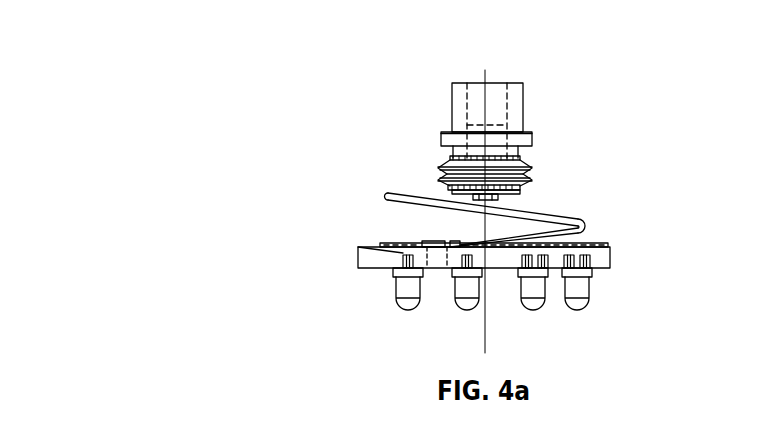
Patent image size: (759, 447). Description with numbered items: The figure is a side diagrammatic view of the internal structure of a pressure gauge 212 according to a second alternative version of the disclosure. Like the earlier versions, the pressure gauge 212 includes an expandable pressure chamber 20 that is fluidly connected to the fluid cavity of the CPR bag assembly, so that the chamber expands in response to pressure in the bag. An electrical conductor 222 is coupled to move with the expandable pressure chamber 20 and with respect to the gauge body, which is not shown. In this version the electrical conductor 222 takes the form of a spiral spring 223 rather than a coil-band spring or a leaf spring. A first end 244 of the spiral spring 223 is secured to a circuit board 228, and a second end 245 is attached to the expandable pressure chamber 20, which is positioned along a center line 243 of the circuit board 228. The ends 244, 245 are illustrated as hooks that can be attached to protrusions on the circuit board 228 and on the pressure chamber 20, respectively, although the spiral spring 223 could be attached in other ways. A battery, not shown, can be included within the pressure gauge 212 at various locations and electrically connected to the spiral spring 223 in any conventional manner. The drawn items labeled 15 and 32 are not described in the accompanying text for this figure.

The central axis 15 is at (489, 196).
The pressure gauge 212 is at (556, 97).
The center line 243 is at (485, 117).
The expandable pressure chamber 20 is at (534, 164).
The second end 245 is at (500, 198).
The electrical conductor 222 is at (545, 220).
The spiral spring 223 is at (569, 255).
The first end 244 is at (284, 232).
The circuit board 228 is at (399, 262).
The light emitting diodes 32 is at (481, 328).